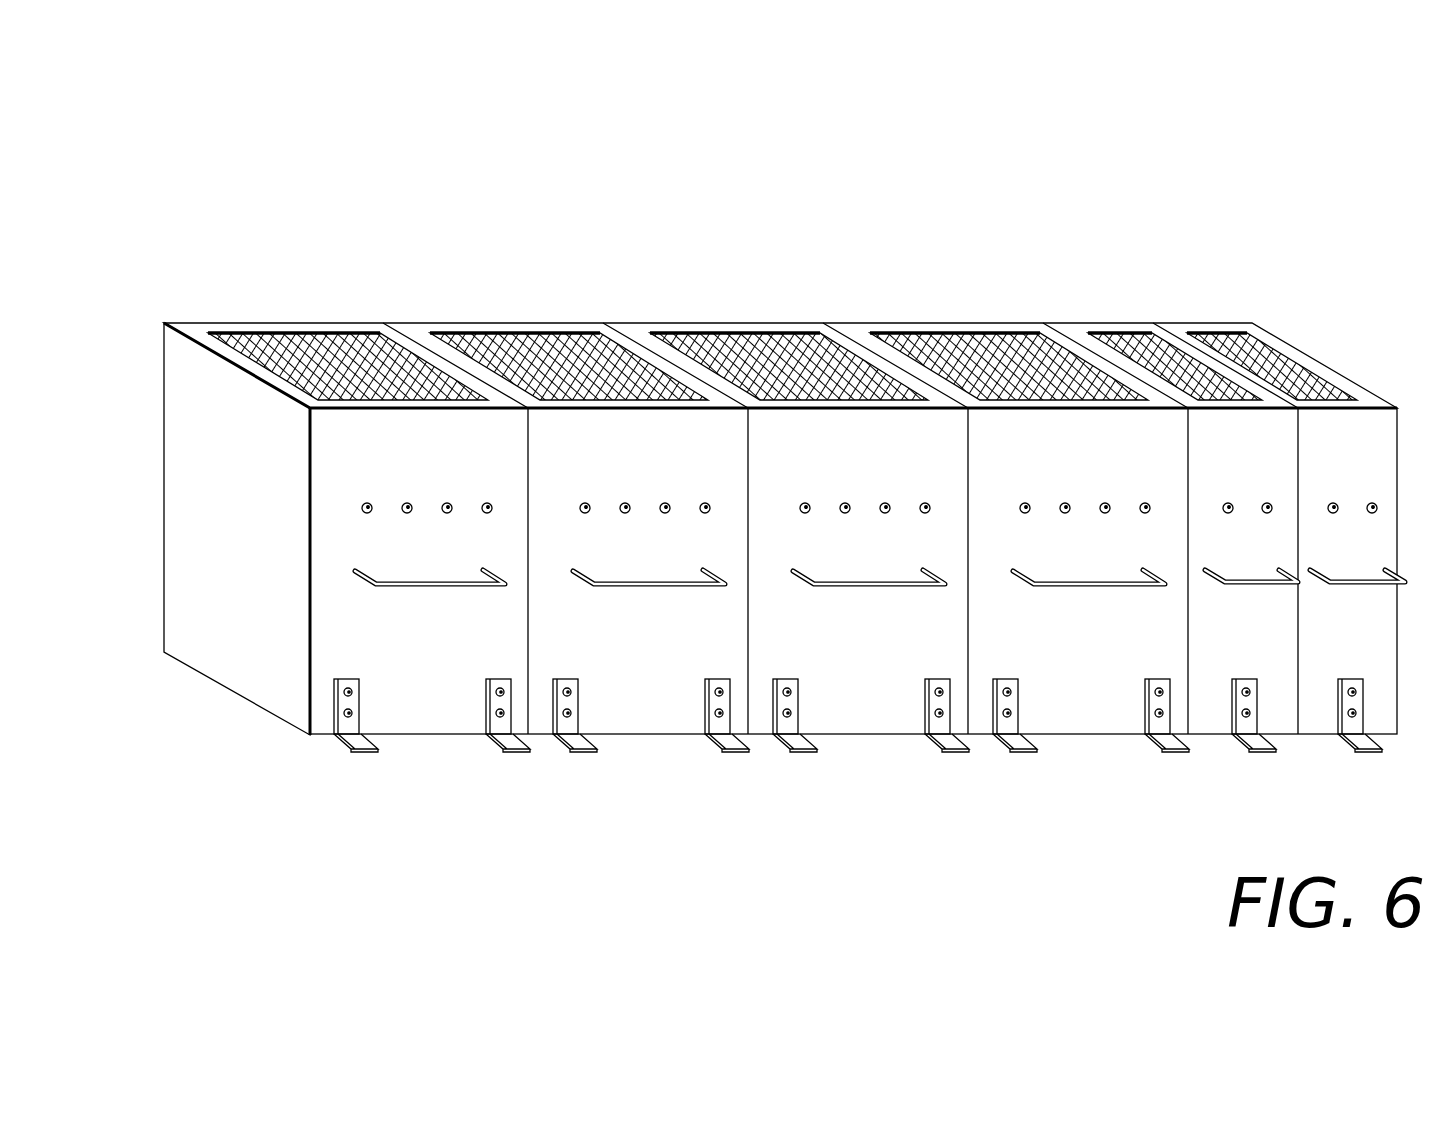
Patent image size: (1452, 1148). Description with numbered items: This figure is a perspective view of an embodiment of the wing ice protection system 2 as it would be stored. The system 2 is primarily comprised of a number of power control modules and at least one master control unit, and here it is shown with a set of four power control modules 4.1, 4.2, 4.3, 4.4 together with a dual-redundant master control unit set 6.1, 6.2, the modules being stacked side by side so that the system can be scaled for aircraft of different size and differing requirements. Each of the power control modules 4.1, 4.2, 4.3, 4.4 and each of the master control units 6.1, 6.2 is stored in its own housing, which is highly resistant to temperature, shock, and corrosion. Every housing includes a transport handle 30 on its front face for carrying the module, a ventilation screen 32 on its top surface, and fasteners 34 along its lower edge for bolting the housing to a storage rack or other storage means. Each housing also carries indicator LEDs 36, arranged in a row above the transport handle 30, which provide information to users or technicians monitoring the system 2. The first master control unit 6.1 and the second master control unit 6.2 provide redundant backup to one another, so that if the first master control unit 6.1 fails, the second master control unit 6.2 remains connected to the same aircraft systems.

The wing ice protection system 2 is at (306, 122).
The transport handle 30 is at (437, 588).
The ventilation screen 32 is at (655, 335).
The fasteners 34 is at (573, 746).
The indicator LEDs 36 is at (483, 504).
The power control module 4.1 is at (384, 461).
The power control module 4.2 is at (606, 461).
The power control module 4.3 is at (826, 461).
The power control module 4.4 is at (1046, 461).
The first master control unit 6.1 is at (1270, 493).
The second master control unit 6.2 is at (1375, 493).